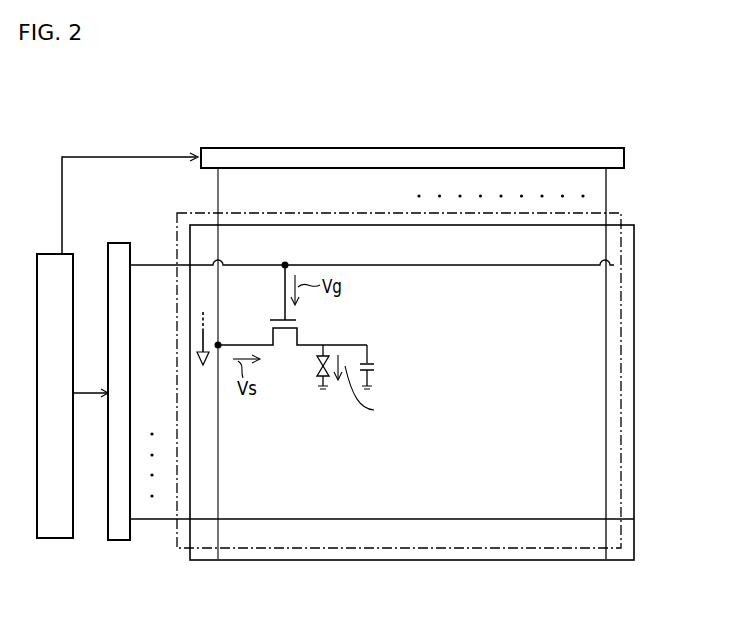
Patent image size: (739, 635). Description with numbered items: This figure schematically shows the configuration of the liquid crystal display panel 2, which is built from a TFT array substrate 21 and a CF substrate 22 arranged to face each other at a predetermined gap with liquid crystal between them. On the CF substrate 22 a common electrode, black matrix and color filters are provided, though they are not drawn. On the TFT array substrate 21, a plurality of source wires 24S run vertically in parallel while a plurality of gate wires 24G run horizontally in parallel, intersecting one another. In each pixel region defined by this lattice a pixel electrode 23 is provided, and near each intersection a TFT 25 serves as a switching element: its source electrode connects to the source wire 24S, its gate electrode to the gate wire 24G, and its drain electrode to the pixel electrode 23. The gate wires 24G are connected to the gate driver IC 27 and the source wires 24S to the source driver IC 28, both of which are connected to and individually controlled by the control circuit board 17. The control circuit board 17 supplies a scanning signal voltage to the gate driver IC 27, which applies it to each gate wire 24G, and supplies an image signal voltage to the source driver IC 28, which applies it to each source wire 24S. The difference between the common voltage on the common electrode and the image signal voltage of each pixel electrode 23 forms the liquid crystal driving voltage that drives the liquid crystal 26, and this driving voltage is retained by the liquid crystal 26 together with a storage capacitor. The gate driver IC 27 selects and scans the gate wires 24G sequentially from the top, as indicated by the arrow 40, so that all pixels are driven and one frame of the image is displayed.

The liquid crystal display panel 2 is at (445, 356).
The control circuit board 17 is at (48, 254).
The TFT array substrate 21 is at (634, 418).
The CF substrate 22 is at (621, 358).
The pixel electrode 23 is at (340, 345).
The gate wire 24G is at (150, 263).
The source wire 24S is at (219, 190).
The TFT 25 is at (266, 320).
The liquid crystal 26 is at (318, 368).
The gate driver IC 27 is at (115, 541).
The source driver IC 28 is at (598, 148).
The arrow 40 is at (203, 366).